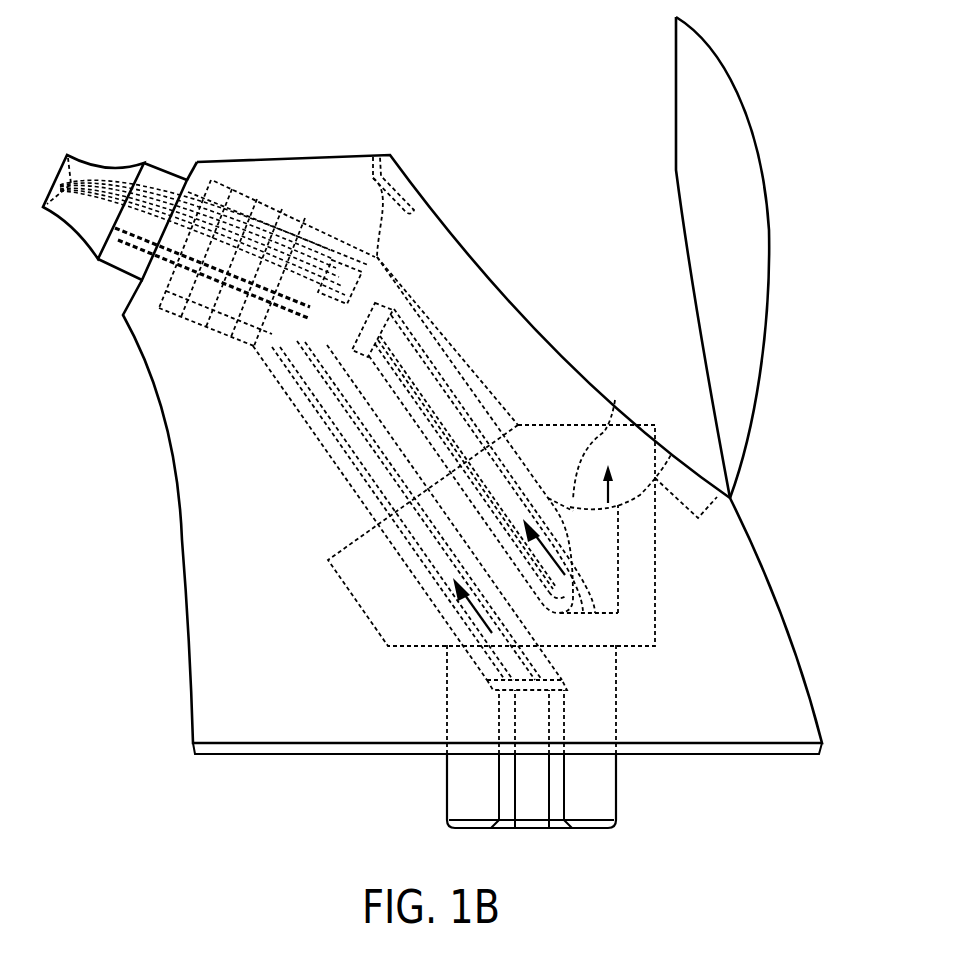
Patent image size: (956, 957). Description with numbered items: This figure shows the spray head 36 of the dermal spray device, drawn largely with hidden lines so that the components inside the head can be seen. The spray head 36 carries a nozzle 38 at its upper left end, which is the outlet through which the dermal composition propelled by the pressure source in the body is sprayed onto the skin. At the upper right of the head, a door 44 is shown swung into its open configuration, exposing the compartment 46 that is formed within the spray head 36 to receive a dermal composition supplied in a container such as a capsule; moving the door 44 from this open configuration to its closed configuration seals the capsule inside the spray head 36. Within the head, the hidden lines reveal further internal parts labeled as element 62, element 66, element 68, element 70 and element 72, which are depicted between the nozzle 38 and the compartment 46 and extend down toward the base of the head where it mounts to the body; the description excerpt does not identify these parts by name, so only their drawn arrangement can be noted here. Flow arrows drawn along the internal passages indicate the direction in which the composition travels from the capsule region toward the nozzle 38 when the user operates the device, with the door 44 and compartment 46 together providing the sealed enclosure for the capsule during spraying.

The spray head 36 is at (177, 522).
The nozzle 38 is at (124, 178).
The door 44 is at (755, 208).
The compartment 46 is at (462, 196).
The outlet passage 62 is at (620, 512).
The riser passage 66 is at (615, 400).
The connector block 68 is at (625, 645).
The supply tube 70 is at (513, 426).
The cable 72 is at (373, 178).